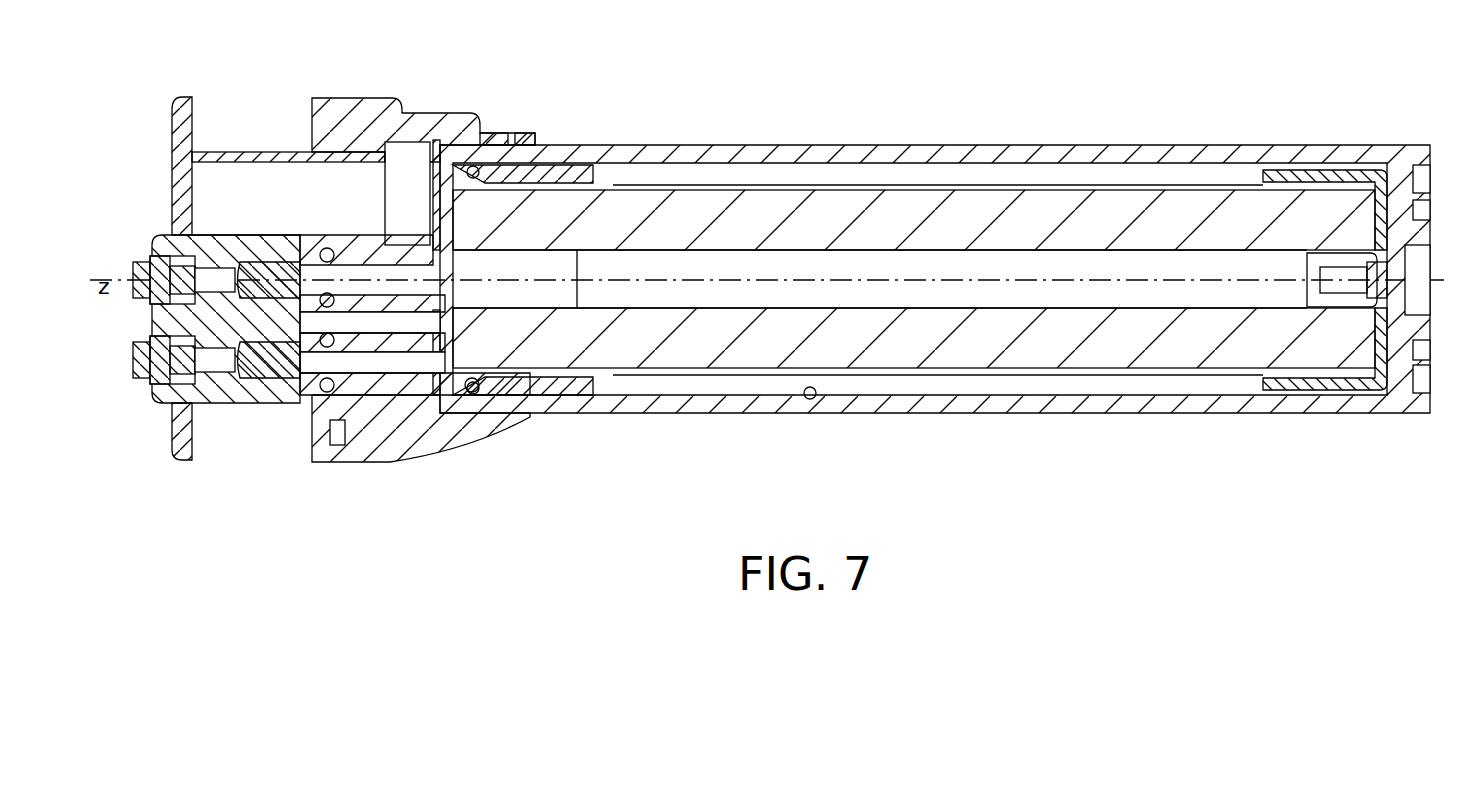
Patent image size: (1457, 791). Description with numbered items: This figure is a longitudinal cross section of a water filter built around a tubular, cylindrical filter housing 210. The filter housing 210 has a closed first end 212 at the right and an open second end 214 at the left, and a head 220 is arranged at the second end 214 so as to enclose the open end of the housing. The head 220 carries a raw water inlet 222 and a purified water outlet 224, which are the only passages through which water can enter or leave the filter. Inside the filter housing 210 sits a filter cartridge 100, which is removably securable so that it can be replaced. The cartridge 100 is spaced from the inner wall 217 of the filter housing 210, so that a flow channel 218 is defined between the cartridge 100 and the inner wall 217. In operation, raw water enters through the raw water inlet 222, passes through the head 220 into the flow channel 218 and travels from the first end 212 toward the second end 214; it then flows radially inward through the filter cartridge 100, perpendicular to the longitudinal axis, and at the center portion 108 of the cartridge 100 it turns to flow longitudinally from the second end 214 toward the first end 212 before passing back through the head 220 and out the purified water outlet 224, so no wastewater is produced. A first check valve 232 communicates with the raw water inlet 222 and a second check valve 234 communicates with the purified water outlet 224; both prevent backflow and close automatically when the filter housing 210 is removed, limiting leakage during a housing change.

The filter cartridge 100 is at (1063, 193).
The center portion 108 is at (788, 258).
The filter housing 210 is at (865, 145).
The first end 212 is at (1410, 155).
The second end 214 is at (415, 135).
The inner wall 217 is at (803, 399).
The flow channel 218 is at (962, 168).
The head 220 is at (280, 173).
The raw water inlet 222 is at (133, 378).
The purified water outlet 224 is at (140, 260).
The first check valve 232 is at (272, 362).
The second check valve 234 is at (247, 240).